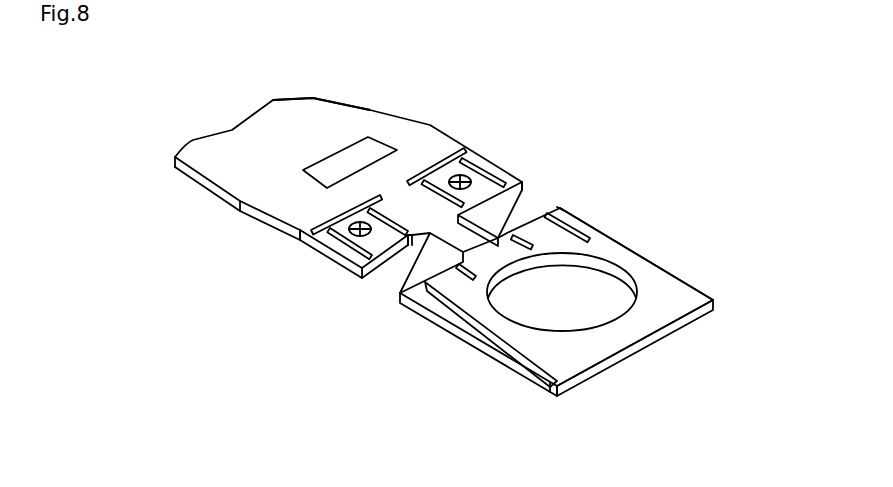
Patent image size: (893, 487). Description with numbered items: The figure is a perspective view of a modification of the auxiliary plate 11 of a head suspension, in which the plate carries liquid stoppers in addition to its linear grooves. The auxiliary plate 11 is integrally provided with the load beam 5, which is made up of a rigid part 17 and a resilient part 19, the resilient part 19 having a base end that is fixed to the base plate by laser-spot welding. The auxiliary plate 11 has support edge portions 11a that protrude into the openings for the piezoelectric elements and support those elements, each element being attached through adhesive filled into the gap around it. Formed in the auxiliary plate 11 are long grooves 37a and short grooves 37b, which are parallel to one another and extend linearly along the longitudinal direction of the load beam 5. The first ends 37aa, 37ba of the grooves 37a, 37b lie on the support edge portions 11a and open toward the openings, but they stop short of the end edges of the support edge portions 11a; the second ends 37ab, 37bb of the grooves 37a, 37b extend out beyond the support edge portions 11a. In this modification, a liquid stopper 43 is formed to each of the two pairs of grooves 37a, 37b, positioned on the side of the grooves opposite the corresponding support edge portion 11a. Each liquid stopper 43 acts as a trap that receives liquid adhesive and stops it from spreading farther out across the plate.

The load beam 5 is at (298, 93).
The auxiliary plate 11 is at (673, 285).
The support edge portion 11a is at (525, 190).
The rigid part 17 is at (205, 152).
The resilient part 19 is at (390, 130).
The liquid stopper 43 is at (355, 222).
The long groove 37a is at (487, 187).
The first end of long groove 37aa is at (357, 250).
The second end of long groove 37ab is at (337, 218).
The short groove 37b is at (618, 243).
The first end of short groove 37ba is at (562, 396).
The second end of short groove 37bb is at (567, 358).